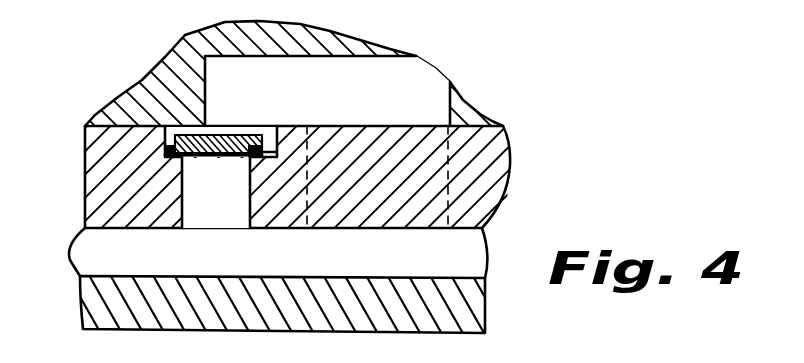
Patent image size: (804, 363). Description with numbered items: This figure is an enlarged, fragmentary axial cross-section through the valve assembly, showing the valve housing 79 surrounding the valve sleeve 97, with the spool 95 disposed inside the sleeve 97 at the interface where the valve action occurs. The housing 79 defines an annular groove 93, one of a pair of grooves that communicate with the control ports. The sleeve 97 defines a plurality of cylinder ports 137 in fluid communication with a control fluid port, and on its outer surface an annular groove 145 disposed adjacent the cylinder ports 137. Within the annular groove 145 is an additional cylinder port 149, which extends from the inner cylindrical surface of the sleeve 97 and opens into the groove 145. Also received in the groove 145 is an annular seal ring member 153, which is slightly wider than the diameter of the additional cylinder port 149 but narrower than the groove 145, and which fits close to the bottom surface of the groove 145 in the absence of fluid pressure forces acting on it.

The valve housing 79 is at (140, 97).
The annular groove 93 is at (397, 90).
The valve sleeve 97 is at (481, 208).
The cylinder ports 137 is at (489, 160).
The annular seal ring member 153 is at (168, 149).
The annular groove 145 is at (241, 136).
The additional cylinder port 149 is at (203, 194).
The valve spool 95 is at (467, 311).